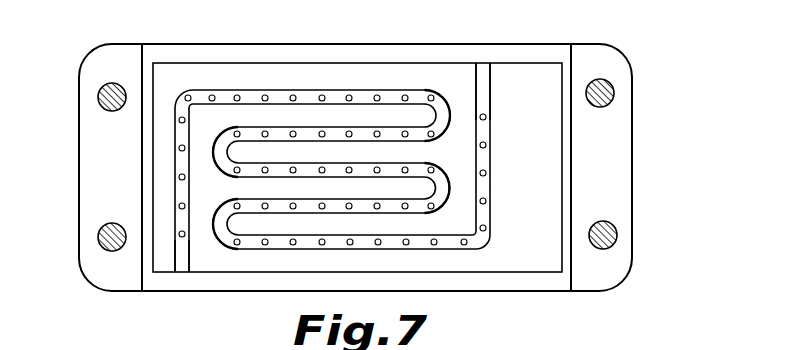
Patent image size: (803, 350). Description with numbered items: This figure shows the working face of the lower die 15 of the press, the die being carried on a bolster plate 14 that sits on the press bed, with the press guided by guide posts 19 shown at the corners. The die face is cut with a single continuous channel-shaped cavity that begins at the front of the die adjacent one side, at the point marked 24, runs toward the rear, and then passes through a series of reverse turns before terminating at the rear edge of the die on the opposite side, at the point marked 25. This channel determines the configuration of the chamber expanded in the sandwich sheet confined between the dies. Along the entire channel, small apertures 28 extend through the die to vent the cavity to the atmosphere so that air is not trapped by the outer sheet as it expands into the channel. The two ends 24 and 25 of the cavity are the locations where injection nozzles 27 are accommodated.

The bolster plate 14 is at (181, 53).
The lower die 15 is at (338, 76).
The guide posts 19 is at (100, 95).
The start of channel cavity 24 is at (185, 272).
The end of channel cavity 25 is at (483, 63).
The apertures 28 is at (293, 90).
The injection nozzles 27 is at (521, 343).